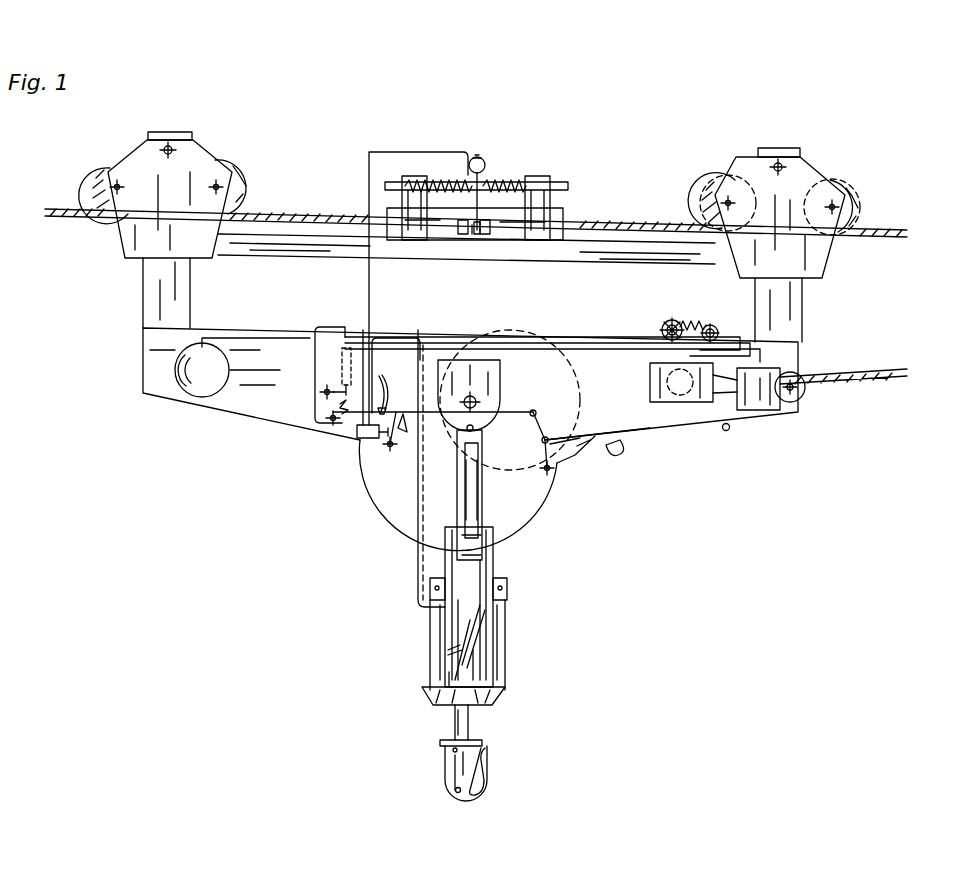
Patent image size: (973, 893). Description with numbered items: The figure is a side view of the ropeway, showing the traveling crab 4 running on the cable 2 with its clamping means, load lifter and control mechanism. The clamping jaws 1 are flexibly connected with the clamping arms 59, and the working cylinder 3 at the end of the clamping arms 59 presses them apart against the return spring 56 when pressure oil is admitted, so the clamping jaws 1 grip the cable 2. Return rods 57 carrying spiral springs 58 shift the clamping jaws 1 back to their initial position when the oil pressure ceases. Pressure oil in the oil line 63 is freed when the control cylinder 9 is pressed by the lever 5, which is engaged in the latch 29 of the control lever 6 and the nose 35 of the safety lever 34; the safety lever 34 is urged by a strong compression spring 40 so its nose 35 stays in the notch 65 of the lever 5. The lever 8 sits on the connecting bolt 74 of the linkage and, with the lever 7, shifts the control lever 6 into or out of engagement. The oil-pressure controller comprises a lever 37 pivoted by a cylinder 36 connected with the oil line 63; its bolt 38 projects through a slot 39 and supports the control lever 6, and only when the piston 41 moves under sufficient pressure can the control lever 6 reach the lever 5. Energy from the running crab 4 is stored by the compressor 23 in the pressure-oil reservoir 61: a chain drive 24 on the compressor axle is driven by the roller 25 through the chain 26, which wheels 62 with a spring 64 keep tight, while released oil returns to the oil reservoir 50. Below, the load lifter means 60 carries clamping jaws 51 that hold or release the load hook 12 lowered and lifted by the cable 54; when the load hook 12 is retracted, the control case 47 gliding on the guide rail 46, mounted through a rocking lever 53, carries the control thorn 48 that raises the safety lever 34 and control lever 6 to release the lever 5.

The clamping jaws 1 is at (530, 205).
The cable 2 is at (885, 230).
The working cylinder 3 is at (478, 232).
The traveling crab 4 is at (585, 400).
The lever 5 is at (370, 440).
The control lever 6 is at (403, 432).
The pivot 7 is at (550, 470).
The lever 8 is at (565, 450).
The control cylinder 9 is at (358, 435).
The load hook 12 is at (483, 783).
The compressor 23 is at (658, 390).
The chain drive 24 is at (683, 390).
The roller 25 is at (228, 160).
The chain 26 is at (672, 318).
The latch 29 is at (366, 432).
The safety lever 34 is at (418, 557).
The nose 35 is at (445, 410).
The cylinder 36 is at (343, 362).
The lever 37 is at (345, 398).
The bolt 38 is at (400, 412).
The slot 39 is at (385, 408).
The compression spring 40 is at (318, 410).
The piston 41 is at (355, 400).
The guide rail 46 is at (483, 580).
The control case 47 is at (475, 665).
The control thorn 48 is at (470, 642).
The oil reservoir 50 is at (760, 390).
The clamping jaws 51 is at (435, 682).
The rocking lever 53 is at (440, 650).
The cable 54 is at (900, 372).
The return spring 56 is at (475, 155).
The return rods 57 is at (452, 183).
The spiral springs 58 is at (455, 182).
The clamping arms 59 is at (503, 225).
The load lifter means 60 is at (500, 697).
The pressure-oil reservoir 61 is at (177, 365).
The wheels 62 is at (700, 340).
The oil line 63 is at (372, 150).
The spring 64 is at (700, 322).
The notch 65 is at (392, 446).
The connecting bolt 74 is at (727, 430).